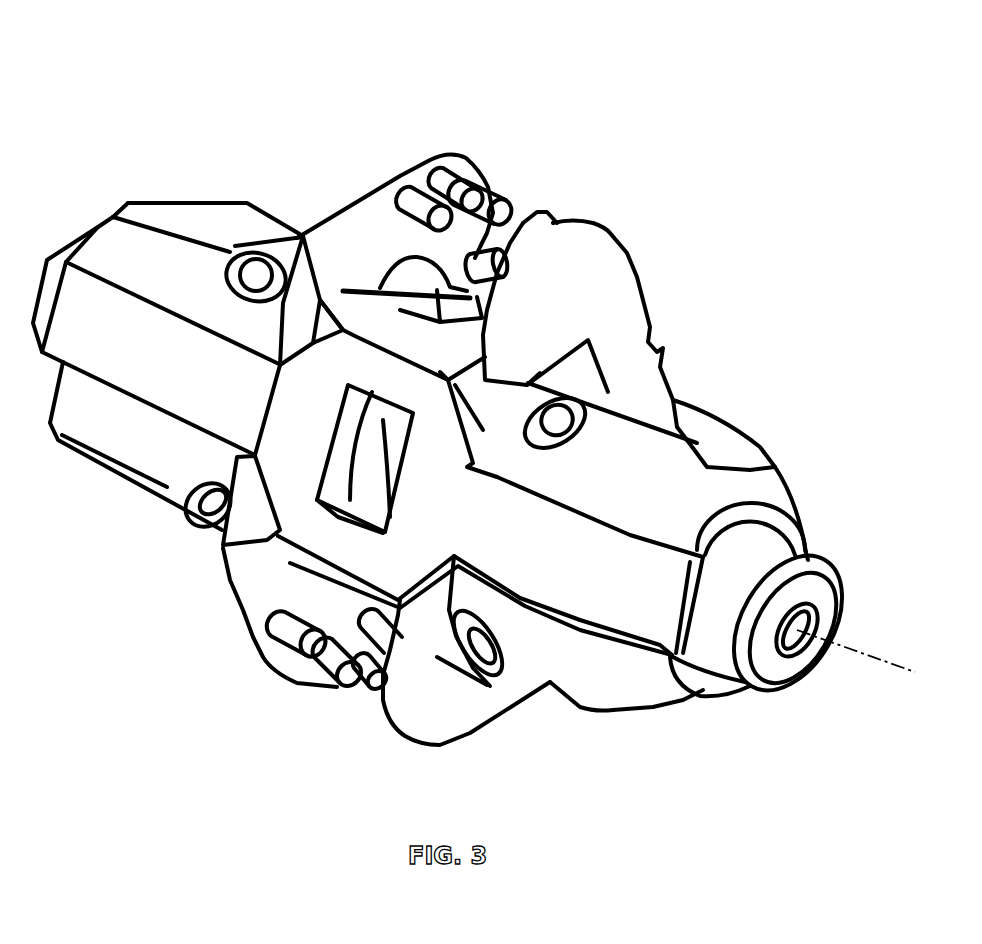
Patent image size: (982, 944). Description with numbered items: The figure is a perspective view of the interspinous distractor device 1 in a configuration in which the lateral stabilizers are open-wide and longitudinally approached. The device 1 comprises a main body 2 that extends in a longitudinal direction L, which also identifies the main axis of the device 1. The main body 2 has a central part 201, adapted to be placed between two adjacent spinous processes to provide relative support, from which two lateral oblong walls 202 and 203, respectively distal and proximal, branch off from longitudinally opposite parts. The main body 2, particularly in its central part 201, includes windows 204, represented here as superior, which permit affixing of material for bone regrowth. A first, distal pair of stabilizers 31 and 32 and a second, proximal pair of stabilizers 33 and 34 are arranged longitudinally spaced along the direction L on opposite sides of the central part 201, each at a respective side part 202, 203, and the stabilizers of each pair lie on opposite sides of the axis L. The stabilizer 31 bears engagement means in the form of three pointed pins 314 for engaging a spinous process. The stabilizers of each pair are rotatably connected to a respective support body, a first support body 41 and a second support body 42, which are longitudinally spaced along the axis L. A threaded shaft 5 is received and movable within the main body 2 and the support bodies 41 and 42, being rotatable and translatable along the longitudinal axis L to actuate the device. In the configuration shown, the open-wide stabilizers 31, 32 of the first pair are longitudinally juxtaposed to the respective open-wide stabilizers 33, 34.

The interspinous distractor device 1 is at (736, 174).
The main body 2 is at (347, 375).
The threaded shaft 5 is at (746, 599).
The stabilizer 31 is at (630, 307).
The stabilizer 32 is at (435, 730).
The stabilizer 33 is at (397, 197).
The stabilizer 34 is at (257, 620).
The first support body 41 is at (632, 473).
The second support body 42 is at (178, 291).
The central part 201 is at (318, 473).
The lateral oblong wall 202 is at (596, 574).
The lateral oblong wall 203 is at (183, 377).
The window 204 is at (425, 308).
The pin 314 is at (500, 200).
The longitudinal direction L is at (882, 653).